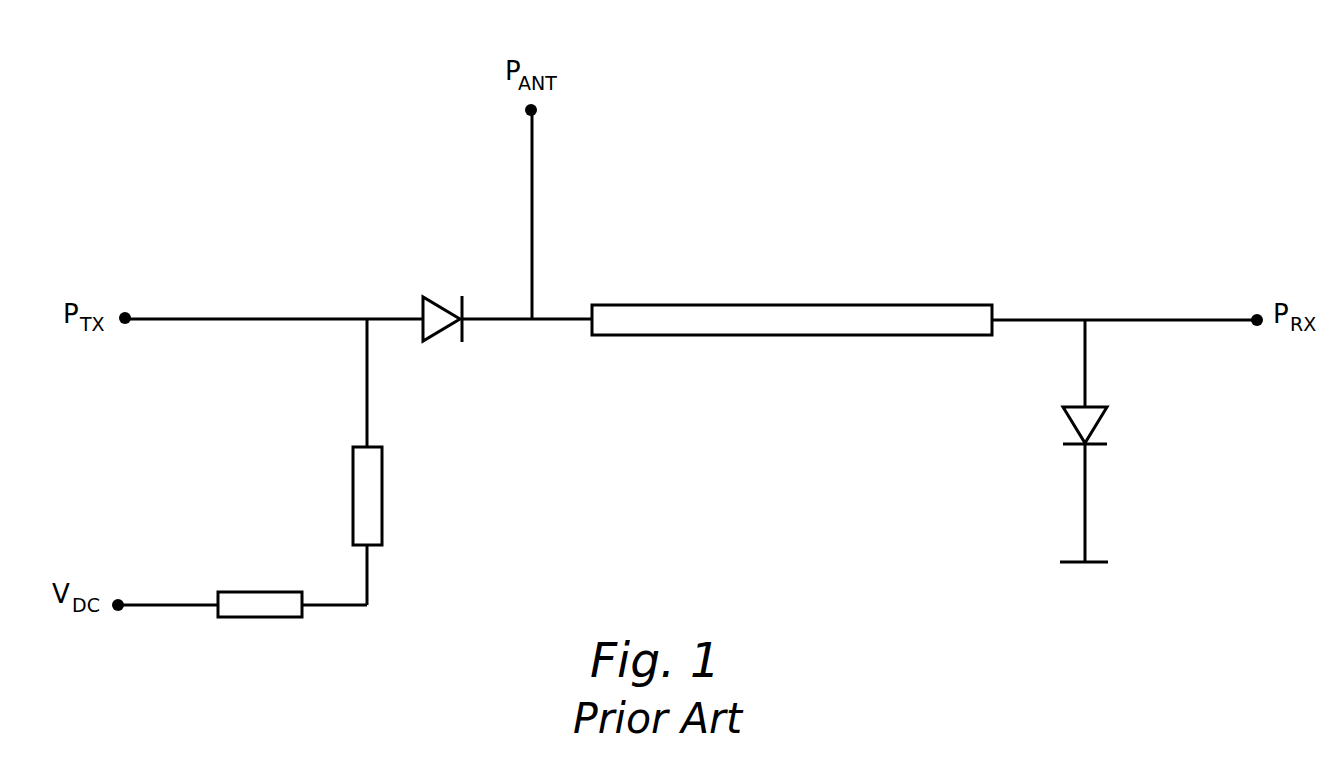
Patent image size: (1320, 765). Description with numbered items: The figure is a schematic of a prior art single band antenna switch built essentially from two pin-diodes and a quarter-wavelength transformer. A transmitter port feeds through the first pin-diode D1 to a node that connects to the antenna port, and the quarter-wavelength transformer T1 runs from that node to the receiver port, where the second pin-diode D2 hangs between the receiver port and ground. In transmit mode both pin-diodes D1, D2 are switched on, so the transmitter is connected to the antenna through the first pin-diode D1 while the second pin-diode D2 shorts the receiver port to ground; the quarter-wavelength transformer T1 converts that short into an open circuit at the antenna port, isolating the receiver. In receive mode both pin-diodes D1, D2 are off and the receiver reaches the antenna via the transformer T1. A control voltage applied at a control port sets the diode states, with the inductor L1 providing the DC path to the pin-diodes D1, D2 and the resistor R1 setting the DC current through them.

The first pin-diode D1 is at (442, 297).
The second pin-diode D2 is at (1063, 425).
The inductor L1 is at (389, 496).
The resistor R1 is at (260, 586).
The Lambda/4 transformer T1 is at (792, 299).